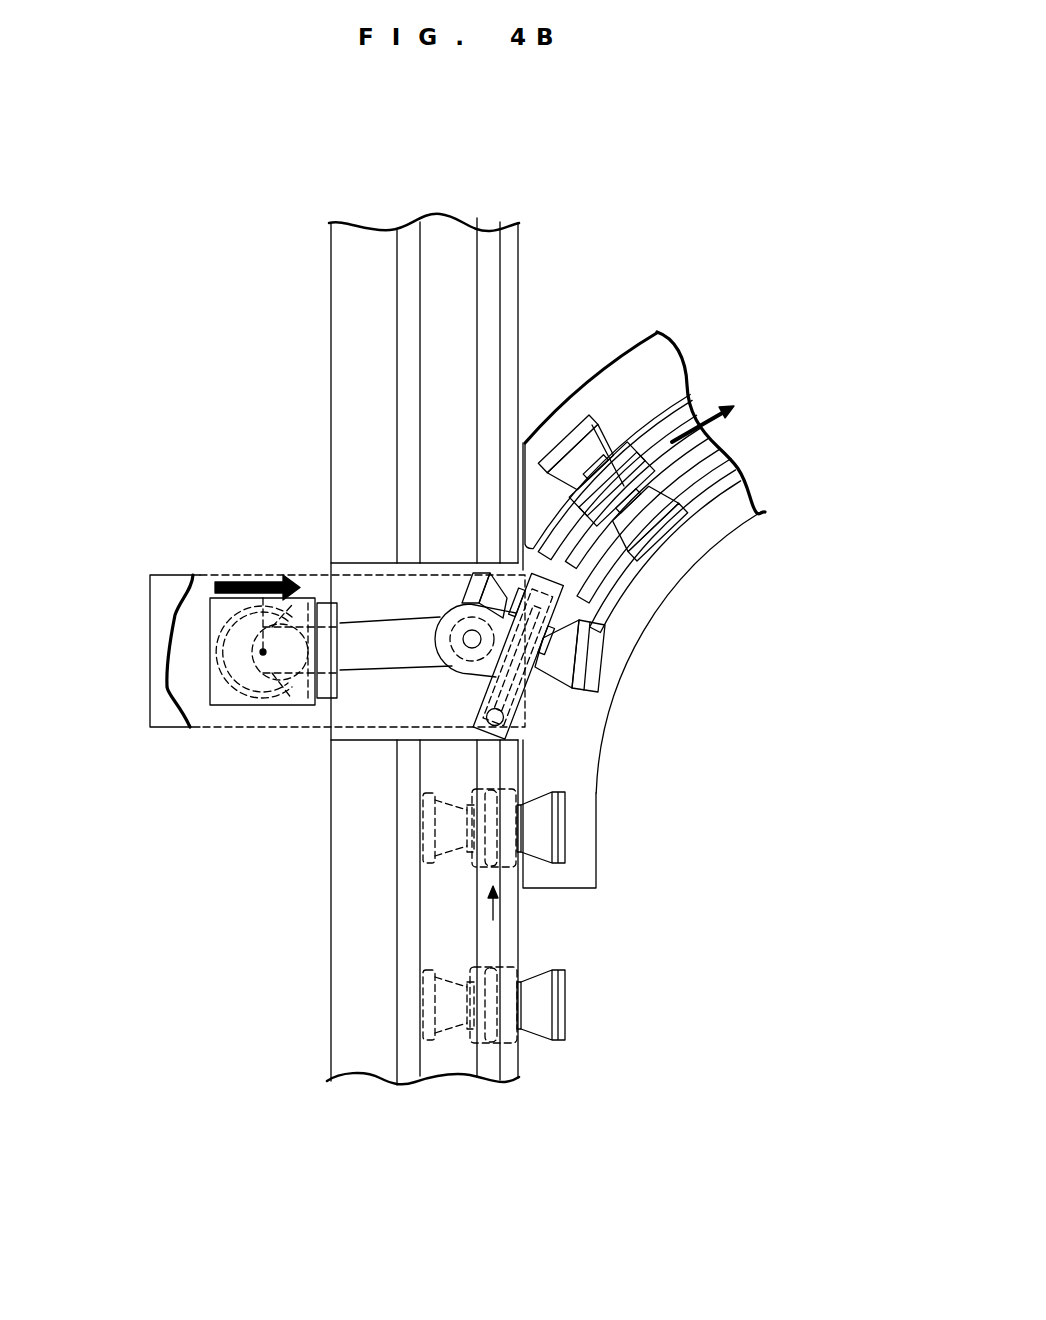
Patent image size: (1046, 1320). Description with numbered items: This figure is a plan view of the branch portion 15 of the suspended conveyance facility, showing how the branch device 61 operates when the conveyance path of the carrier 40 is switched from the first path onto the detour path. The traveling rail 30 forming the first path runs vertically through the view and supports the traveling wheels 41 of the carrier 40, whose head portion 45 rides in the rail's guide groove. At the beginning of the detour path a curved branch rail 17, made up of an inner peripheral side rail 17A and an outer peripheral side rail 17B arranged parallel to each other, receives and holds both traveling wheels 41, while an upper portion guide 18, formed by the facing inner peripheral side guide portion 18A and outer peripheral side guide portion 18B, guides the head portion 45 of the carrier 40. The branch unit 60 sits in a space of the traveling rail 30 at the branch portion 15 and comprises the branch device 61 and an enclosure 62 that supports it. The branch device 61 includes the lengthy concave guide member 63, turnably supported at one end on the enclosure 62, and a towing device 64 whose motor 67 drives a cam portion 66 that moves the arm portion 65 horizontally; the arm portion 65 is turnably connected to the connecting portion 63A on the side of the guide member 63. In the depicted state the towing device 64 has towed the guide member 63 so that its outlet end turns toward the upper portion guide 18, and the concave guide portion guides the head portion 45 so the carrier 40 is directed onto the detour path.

The traveling rail 30 is at (326, 310).
The branch portion 15 is at (632, 835).
The upper portion guide 18 is at (658, 398).
The inner peripheral side guide portion 18A is at (704, 436).
The outer peripheral side guide portion 18B is at (674, 402).
The branch rail 17 is at (676, 563).
The inner peripheral side rail 17A is at (738, 482).
The outer peripheral side rail 17B is at (712, 522).
The carrier 40 is at (631, 572).
The traveling wheel 41 is at (574, 458).
The head portion 45 is at (592, 425).
The guide member 63 is at (562, 748).
The connecting portion 63A is at (483, 680).
The branch unit 60 is at (337, 588).
The branch device 61 is at (306, 584).
The enclosure 62 is at (182, 562).
The towing device 64 is at (285, 722).
The arm portion 65 is at (417, 647).
The cam portion 66 is at (326, 694).
The motor 67 is at (212, 650).